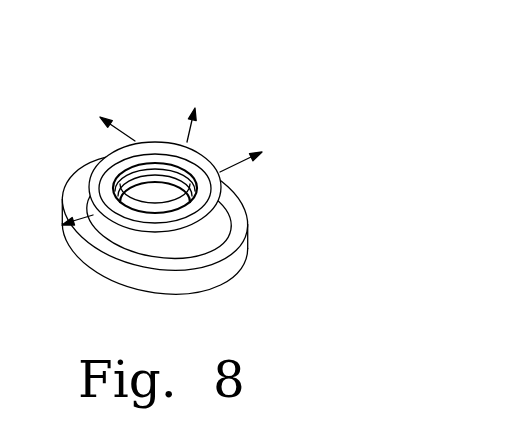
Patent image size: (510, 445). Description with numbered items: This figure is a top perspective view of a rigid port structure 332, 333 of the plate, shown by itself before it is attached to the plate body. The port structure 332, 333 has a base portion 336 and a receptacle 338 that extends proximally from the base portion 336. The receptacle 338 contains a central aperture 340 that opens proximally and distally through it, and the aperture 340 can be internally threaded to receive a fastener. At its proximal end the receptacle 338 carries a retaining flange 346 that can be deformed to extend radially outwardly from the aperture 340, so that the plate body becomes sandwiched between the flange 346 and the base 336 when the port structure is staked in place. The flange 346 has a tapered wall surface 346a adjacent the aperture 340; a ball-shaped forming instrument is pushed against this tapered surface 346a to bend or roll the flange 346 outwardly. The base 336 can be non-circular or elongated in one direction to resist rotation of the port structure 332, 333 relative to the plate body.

The port structure 332 is at (188, 208).
The second port structure 333 is at (274, 232).
The base portion 336 is at (110, 265).
The receptacle 338 is at (103, 157).
The central aperture 340 is at (150, 168).
The proximal retaining flange 346 is at (200, 145).
The tapered wall surface 346a is at (222, 177).